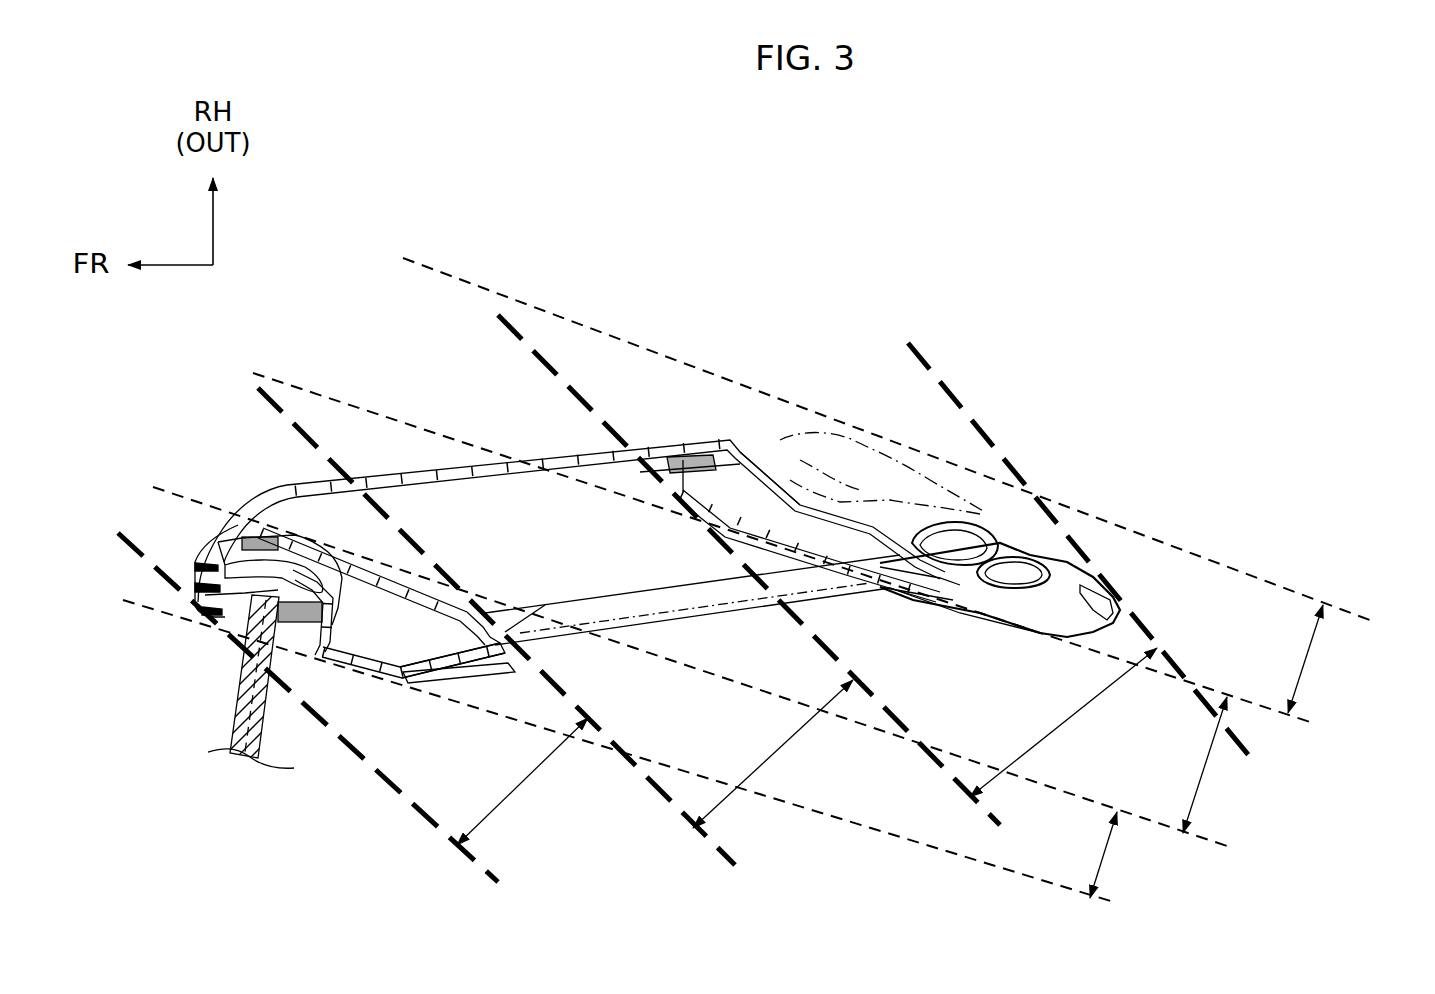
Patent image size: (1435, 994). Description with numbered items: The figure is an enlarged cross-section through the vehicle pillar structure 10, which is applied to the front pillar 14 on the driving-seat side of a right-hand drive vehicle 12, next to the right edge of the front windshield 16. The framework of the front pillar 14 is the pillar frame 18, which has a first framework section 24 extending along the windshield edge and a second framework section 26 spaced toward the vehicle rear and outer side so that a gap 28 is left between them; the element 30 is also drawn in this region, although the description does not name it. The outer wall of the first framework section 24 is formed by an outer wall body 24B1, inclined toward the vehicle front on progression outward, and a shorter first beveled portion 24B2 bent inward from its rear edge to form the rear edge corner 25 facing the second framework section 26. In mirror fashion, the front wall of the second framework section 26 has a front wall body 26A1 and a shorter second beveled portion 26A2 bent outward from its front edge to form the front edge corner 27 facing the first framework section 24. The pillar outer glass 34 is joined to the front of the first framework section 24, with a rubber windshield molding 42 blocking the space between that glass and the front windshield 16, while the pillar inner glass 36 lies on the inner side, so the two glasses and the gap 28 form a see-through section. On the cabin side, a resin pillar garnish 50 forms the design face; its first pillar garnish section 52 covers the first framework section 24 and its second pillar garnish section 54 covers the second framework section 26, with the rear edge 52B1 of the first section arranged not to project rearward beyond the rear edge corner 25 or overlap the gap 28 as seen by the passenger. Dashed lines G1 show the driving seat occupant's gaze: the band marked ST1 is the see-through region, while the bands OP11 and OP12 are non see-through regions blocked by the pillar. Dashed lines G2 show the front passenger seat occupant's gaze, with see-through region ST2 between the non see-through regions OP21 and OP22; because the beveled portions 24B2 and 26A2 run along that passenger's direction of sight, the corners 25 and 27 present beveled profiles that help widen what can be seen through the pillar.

The vehicle pillar structure 10 is at (600, 257).
The vehicle 12 is at (252, 674).
The front pillar 14 is at (528, 437).
The front windshield 16 is at (235, 712).
The pillar frame 18 is at (601, 492).
The first framework section 24 is at (443, 583).
The outer wall body 24B1 is at (365, 557).
The first beveled portion 24B2 is at (480, 630).
The rear edge corner 25 is at (510, 628).
The second framework section 26 is at (766, 489).
The front wall body 26A1 is at (760, 540).
The second beveled portion 26A2 is at (685, 505).
The front edge corner 27 is at (665, 492).
The gap 28 is at (522, 539).
The airbag module 30 is at (862, 430).
The pillar outer glass 34 is at (440, 460).
The pillar inner glass 36 is at (687, 627).
The windshield molding 42 is at (200, 580).
The pillar garnish 50 is at (759, 657).
The first pillar garnish section 52 is at (468, 718).
The rear edge of first pillar garnish section 52B1 is at (507, 672).
The second pillar garnish section 54 is at (1060, 627).
The gaze of driving seat occupant G1 is at (443, 272).
The gaze of front passenger seat occupant G2 is at (522, 345).
The non see-through region OP11 is at (1105, 855).
The non see-through region OP12 is at (1305, 660).
The non see-through region OP21 is at (520, 783).
The non see-through region OP22 is at (1075, 720).
The see-through region ST1 is at (1203, 785).
The see-through region ST2 is at (775, 757).